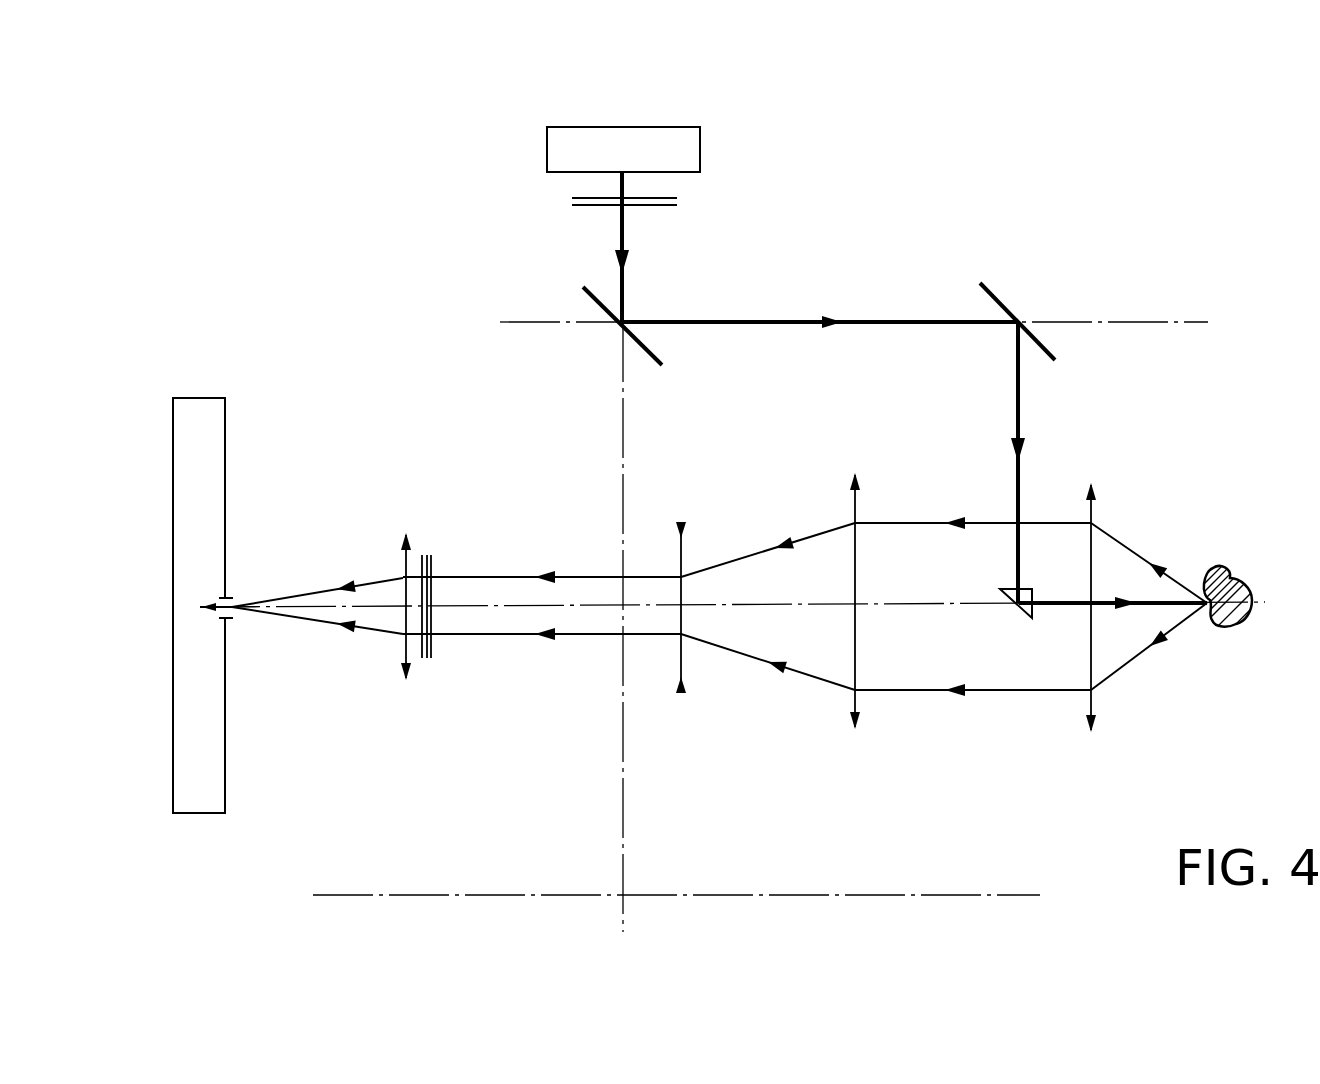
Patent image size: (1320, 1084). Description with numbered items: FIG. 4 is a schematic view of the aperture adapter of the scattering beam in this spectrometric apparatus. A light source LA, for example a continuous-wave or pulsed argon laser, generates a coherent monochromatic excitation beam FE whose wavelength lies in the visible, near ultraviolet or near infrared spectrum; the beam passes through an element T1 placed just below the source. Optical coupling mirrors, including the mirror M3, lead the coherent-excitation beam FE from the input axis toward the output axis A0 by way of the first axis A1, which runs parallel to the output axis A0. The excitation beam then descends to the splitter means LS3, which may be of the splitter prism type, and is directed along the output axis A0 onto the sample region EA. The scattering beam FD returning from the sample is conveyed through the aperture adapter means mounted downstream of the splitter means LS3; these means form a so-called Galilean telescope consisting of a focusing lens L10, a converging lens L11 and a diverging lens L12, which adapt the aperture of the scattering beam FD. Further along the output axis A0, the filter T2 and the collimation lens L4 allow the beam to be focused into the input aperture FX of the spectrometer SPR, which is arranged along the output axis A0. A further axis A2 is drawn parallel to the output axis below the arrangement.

The light source LA is at (700, 148).
The telescope / beam expander plate T1 is at (575, 207).
The mirror M3 is at (600, 305).
The first axis A1 is at (873, 322).
The coherent-excitation beam FE is at (1021, 420).
The splitter means LS3 is at (1012, 617).
The scattering beam FD is at (1145, 550).
The sample to be analysed EA is at (1238, 585).
The output axis A0 is at (752, 594).
The focusing lens L10 is at (1093, 730).
The converging lens L11 is at (857, 730).
The diverging lens L12 is at (685, 690).
The collimation lens L4 is at (404, 677).
The filter T2 is at (431, 655).
The input aperture FX is at (232, 598).
The spectrometer SPR is at (208, 398).
The second optical axis A2 is at (695, 885).